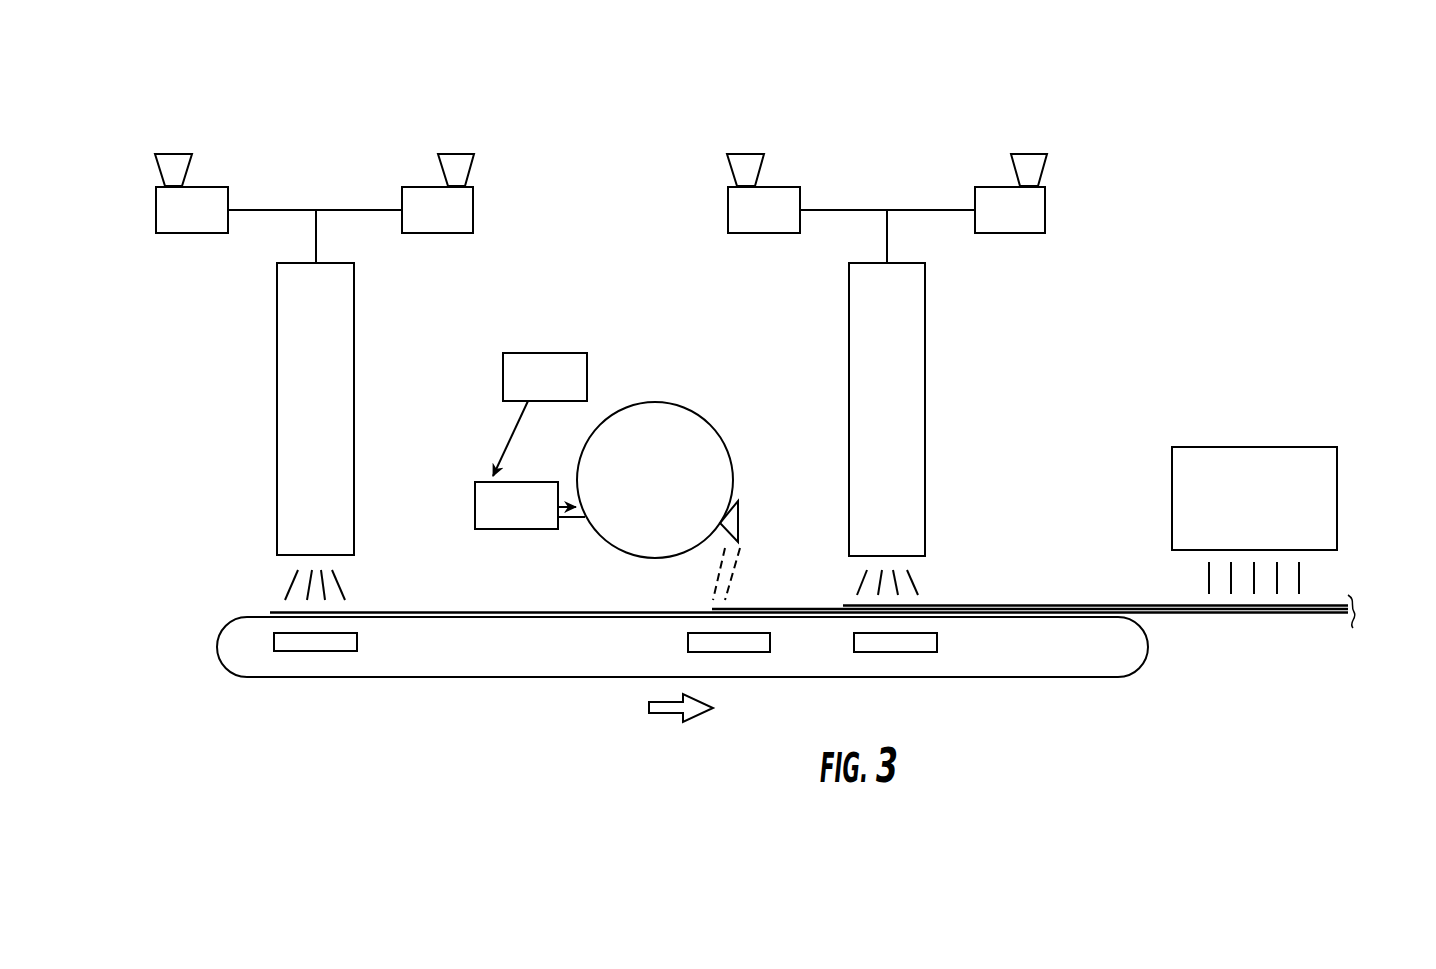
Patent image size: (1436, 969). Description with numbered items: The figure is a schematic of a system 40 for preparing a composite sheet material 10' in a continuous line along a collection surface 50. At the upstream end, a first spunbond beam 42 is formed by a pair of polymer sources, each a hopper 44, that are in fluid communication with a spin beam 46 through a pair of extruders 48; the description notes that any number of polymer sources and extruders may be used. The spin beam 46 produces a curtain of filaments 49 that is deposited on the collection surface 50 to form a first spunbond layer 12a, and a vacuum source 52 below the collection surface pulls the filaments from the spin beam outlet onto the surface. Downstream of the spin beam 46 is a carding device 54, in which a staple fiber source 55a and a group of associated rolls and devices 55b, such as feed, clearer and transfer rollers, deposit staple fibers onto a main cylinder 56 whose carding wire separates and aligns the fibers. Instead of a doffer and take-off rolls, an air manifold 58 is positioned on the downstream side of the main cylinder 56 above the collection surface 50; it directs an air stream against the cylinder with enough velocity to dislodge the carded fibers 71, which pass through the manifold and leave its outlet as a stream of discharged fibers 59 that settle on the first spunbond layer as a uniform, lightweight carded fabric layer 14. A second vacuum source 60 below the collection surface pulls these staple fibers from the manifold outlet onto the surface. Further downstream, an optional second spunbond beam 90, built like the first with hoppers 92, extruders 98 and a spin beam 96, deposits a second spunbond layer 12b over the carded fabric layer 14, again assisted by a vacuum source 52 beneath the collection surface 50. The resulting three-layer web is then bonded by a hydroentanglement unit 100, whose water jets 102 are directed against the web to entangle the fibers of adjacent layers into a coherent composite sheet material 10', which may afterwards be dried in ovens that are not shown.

The system for preparing the composite sheet material 40 is at (1162, 194).
The first spunbond beam 42 is at (317, 369).
The polymer source (hopper) 44 is at (186, 170).
The spin beam 46 is at (354, 390).
The extruder 48 is at (156, 210).
The curtain of filaments 49 is at (348, 588).
The collection surface 50 is at (648, 651).
The vacuum source 52 is at (357, 642).
The carding device 54 is at (622, 460).
The staple fiber source 55a is at (587, 378).
The associated rolls and devices 55b is at (475, 506).
The main cylinder 56 is at (707, 430).
The air manifold 58 is at (738, 523).
The stream of discharged fibers 59 is at (736, 565).
The vacuum source 60 is at (770, 642).
The carded fibers 71 is at (717, 574).
The first spunbond layer 12a is at (537, 612).
The second spunbond layer 12b is at (930, 606).
The carded fabric layer 14 is at (783, 609).
The composite sheet material 10' is at (812, 578).
The second spunbond beam 90 is at (887, 366).
The polymer source (hopper) 92 is at (760, 170).
The spin beam 96 is at (925, 311).
The extruder 98 is at (728, 210).
The hydroentanglement unit 100 is at (1337, 497).
The water jets 102 is at (1325, 580).